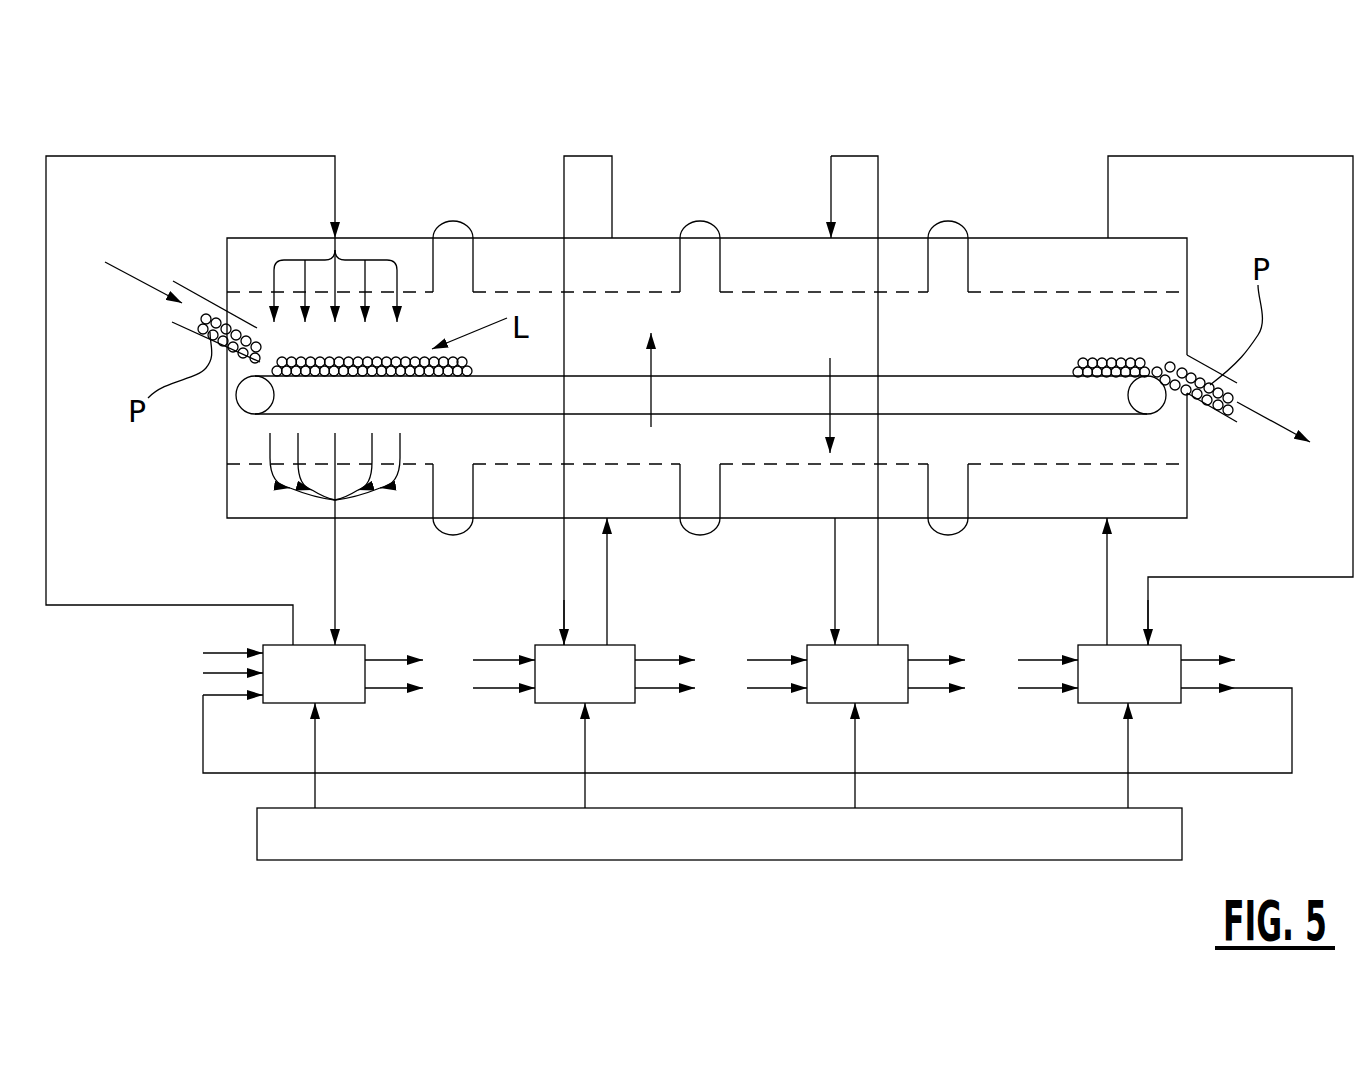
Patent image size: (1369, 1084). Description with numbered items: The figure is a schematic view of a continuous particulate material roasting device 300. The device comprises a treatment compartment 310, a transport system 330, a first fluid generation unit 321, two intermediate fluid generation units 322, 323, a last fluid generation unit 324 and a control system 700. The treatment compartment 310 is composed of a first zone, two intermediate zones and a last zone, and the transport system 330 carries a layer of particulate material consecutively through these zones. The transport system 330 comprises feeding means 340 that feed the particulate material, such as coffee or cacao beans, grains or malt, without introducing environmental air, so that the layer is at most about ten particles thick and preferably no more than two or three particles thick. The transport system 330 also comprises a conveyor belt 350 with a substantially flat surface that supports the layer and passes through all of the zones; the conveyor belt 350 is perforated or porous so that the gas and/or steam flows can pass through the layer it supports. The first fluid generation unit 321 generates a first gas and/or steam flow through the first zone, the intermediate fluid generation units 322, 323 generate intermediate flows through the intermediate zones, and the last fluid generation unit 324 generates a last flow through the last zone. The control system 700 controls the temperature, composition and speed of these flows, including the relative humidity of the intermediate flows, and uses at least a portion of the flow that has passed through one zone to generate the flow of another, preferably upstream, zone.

The continuous roasting device 300 is at (277, 125).
The treatment compartment 310 is at (1198, 228).
The first fluid generation unit 321 is at (340, 702).
The intermediate fluid generation unit 322 is at (613, 702).
The intermediate fluid generation unit 323 is at (885, 702).
The last fluid generation unit 324 is at (1155, 702).
The transport system 330 is at (302, 398).
The feeding means 340 is at (203, 277).
The conveyor belt 350 is at (483, 392).
The control system 700 is at (1170, 835).